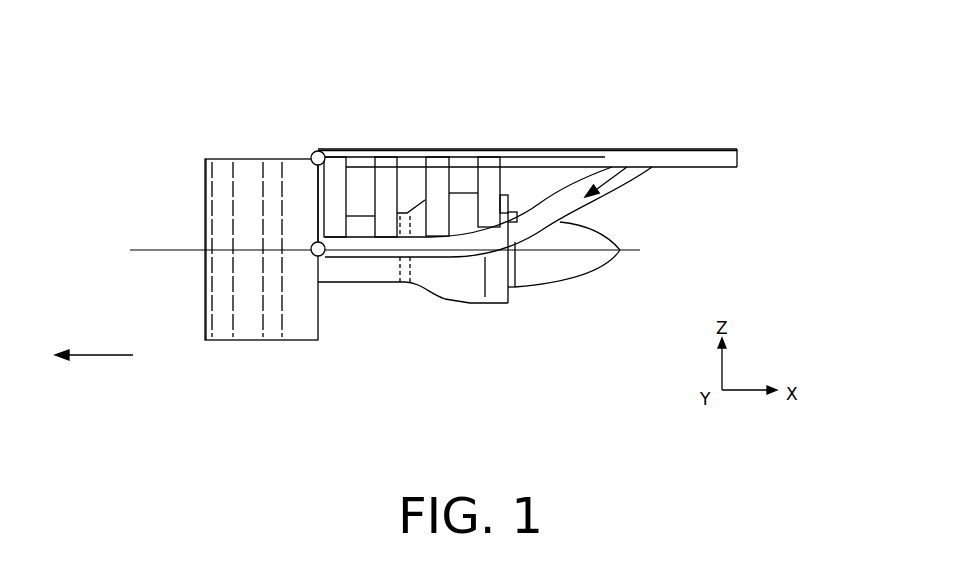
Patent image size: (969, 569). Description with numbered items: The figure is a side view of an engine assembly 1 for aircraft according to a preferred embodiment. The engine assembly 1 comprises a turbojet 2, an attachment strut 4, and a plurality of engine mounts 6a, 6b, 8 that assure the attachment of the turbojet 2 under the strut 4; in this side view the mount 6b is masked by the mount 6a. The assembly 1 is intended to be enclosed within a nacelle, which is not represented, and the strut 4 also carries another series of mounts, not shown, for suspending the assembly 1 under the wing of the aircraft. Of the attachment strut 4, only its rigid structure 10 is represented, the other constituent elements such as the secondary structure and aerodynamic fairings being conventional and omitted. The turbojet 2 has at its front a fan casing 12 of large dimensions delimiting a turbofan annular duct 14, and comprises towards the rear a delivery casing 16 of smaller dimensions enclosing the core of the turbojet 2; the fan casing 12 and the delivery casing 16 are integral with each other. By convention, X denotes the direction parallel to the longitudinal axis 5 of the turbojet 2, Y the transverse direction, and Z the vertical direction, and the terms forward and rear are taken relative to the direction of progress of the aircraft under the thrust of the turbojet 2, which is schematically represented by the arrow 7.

The engine assembly 1 is at (131, 66).
The turbojet 2 is at (601, 311).
The attachment strut 4 is at (608, 106).
The longitudinal axis 5 is at (630, 262).
The engine mount 6a is at (322, 256).
The engine mount 6b is at (332, 250).
The arrow 7 is at (102, 355).
The engine mount 8 is at (317, 150).
The rigid structure 10 is at (716, 137).
The fan casing 12 is at (247, 173).
The turbofan annular duct 14 is at (387, 182).
The delivery casing 16 is at (465, 292).